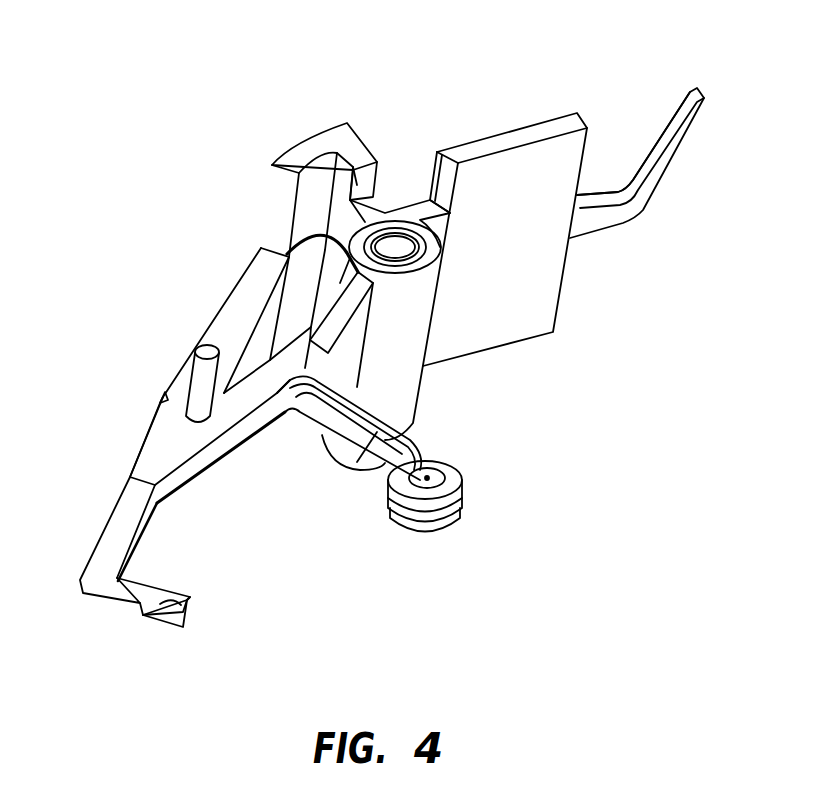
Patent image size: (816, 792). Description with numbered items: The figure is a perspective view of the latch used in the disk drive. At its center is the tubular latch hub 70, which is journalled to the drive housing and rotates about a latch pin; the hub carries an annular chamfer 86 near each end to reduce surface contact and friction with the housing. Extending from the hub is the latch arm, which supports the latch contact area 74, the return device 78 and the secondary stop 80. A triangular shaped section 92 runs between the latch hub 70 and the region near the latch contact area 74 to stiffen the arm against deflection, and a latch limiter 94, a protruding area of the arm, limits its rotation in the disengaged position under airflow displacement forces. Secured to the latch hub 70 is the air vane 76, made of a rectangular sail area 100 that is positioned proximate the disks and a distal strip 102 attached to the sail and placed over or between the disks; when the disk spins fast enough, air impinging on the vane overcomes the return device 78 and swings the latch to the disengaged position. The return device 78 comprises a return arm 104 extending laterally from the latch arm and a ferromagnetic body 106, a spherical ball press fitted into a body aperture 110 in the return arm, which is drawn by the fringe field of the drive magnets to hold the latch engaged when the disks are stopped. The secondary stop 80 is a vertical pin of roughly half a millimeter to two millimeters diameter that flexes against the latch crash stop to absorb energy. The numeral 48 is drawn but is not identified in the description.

The tab 48 is at (188, 600).
The latch hub 70 is at (421, 389).
The latch contact area 74 is at (129, 576).
The air vane 76 is at (603, 190).
The return device 78 is at (334, 433).
The secondary stop 80 is at (192, 370).
The annular chamfer 86 is at (405, 246).
The triangular shaped section 92 is at (262, 259).
The latch limiter 94 is at (160, 403).
The sail area 100 is at (545, 272).
The distal strip 102 is at (620, 215).
The return arm 104 is at (360, 472).
The ferromagnetic body 106 is at (427, 478).
The body aperture 110 is at (462, 497).